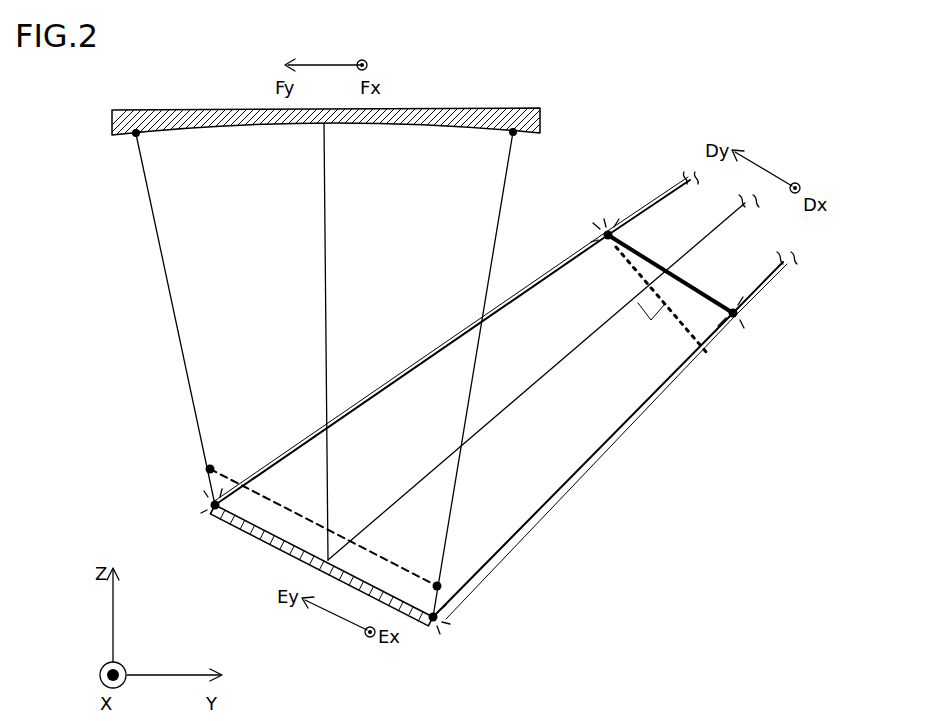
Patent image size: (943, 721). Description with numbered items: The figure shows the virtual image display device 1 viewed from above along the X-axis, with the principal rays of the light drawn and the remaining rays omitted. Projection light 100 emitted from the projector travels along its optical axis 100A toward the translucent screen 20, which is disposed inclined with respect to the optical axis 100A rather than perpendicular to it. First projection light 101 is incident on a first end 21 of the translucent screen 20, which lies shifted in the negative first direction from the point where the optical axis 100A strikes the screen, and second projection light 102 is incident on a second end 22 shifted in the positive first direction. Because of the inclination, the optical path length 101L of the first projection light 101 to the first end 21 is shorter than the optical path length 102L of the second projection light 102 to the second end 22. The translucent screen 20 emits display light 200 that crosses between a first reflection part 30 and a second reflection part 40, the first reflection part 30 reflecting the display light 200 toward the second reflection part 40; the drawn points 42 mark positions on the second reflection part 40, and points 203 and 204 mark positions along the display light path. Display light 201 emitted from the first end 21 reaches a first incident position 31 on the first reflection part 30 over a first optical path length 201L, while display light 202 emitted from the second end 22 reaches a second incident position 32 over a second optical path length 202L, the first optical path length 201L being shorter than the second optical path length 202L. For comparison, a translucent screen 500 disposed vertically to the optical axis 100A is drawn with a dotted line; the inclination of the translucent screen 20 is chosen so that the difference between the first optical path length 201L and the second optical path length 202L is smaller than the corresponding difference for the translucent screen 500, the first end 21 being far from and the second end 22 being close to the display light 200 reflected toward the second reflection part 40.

The virtual image display device 1 is at (768, 134).
The translucent screen 20 is at (707, 294).
The first end 21 is at (735, 318).
The second end 22 is at (605, 238).
The first reflection part 30 is at (312, 570).
The first incident position 31 is at (434, 619).
The second incident position 32 is at (214, 507).
The second reflection part 40 is at (541, 108).
The mirror end points 42 is at (136, 135).
The projection light 100 is at (605, 359).
The optical axis 100A is at (702, 243).
The first projection light 101 is at (760, 288).
The optical path length 101L is at (764, 288).
The second projection light 102 is at (650, 205).
The optical path length 102L is at (630, 217).
The display light 200 is at (476, 443).
The display light 201 is at (566, 483).
The first optical path length 201L is at (607, 452).
The display light 202 is at (407, 374).
The second optical path length 202L is at (371, 394).
The center point 203 is at (440, 592).
The center point 204 is at (208, 469).
The translucent screen 500 is at (687, 332).